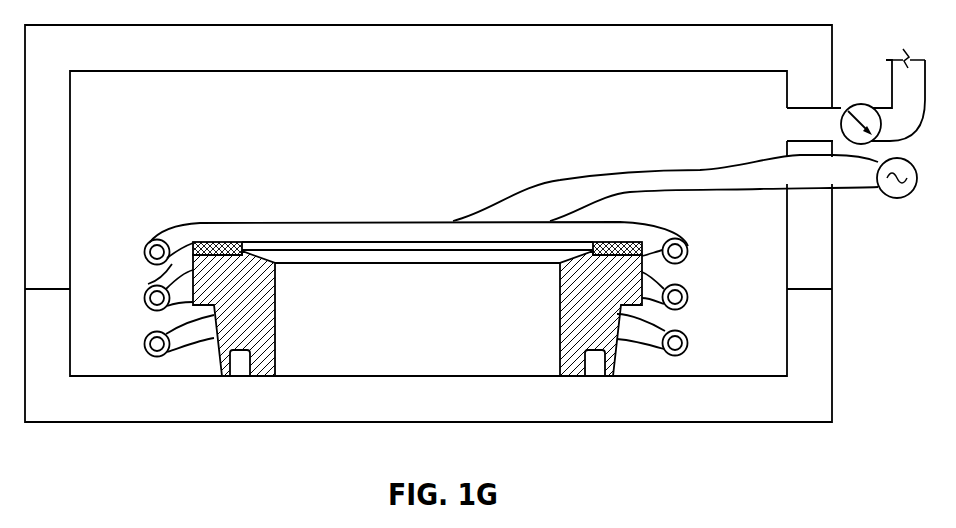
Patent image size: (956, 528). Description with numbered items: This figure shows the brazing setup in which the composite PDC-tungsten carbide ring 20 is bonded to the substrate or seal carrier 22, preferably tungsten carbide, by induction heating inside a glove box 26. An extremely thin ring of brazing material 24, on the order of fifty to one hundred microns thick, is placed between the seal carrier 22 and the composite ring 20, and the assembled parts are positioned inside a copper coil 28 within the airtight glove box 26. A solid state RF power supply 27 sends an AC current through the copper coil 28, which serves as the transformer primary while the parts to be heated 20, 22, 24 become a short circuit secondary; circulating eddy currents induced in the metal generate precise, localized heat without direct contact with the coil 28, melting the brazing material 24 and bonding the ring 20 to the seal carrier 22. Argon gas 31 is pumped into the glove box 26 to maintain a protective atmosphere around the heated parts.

The composite PDC-tungsten carbide ring 20 is at (652, 240).
The seal carrier 22 is at (688, 282).
The brazing material 24 is at (148, 284).
The glove box 26 is at (462, 146).
The solid state RF power supply 27 is at (895, 199).
The copper coil 28 is at (688, 342).
The argon gas 31 is at (858, 104).